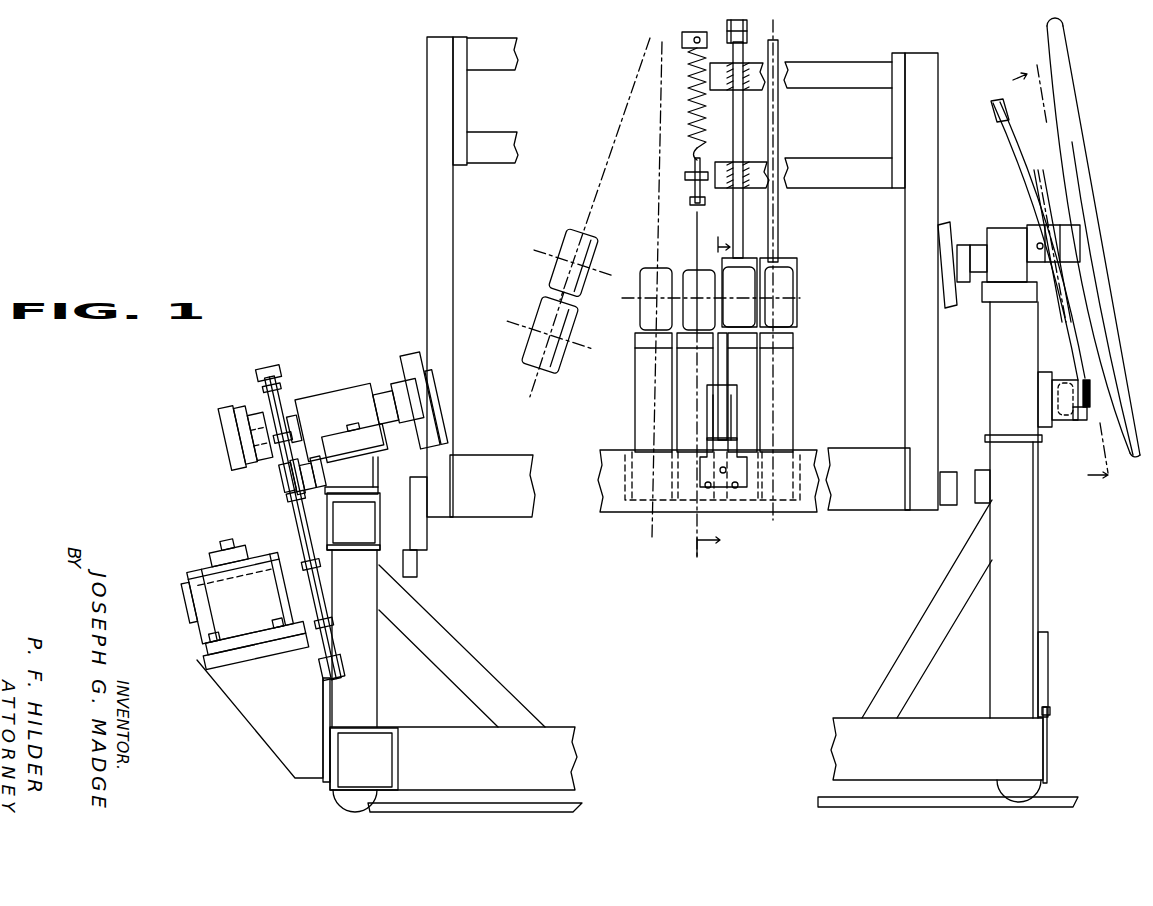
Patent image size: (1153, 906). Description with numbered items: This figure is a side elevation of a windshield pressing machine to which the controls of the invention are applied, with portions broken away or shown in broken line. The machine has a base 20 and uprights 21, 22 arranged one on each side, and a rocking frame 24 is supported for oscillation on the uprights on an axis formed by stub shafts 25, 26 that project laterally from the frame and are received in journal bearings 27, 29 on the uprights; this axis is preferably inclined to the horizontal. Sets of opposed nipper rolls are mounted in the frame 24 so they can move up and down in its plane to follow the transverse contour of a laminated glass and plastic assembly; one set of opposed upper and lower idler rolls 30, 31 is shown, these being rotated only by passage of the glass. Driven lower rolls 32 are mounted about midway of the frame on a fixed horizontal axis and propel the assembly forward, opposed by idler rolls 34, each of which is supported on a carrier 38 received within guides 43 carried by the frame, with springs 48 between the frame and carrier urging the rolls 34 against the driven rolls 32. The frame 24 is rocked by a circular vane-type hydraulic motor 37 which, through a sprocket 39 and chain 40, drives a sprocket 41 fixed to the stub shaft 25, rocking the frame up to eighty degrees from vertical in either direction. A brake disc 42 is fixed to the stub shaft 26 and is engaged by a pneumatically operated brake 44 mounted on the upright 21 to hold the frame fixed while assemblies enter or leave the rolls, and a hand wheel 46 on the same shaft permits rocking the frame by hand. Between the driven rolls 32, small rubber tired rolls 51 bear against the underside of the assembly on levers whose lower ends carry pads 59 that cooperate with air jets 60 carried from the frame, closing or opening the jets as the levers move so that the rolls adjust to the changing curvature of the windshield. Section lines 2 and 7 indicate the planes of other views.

The section line 2- 2 is at (713, 396).
The section line 7- 7 is at (1060, 276).
The base 20 is at (432, 737).
The upright 21 is at (1030, 578).
The upright 22 is at (370, 612).
The rocking frame 24 is at (447, 293).
The stub shaft 25 is at (283, 403).
The stub shaft 26 is at (963, 245).
The journal bearing 27 is at (340, 398).
The journal bearing 29 is at (1002, 228).
The upper idler roll 30 is at (583, 238).
The lower idler roll 31 is at (543, 377).
The driven lower rolls 32 is at (642, 343).
The idler rolls 34 is at (722, 272).
The circular vane-type hydraulic motor 37 is at (205, 577).
The carrier 38 is at (780, 220).
The sprocket 39 is at (308, 642).
The chain 40 is at (290, 505).
The sprocket 41 is at (272, 465).
The brake disc 42 is at (1073, 340).
The guides 43 is at (754, 160).
The pneumatically operated brake 44 is at (1073, 417).
The hand wheel 46 is at (1133, 462).
The springs 48 is at (688, 115).
The rubber tired rolls 51 is at (723, 360).
The pad 59 is at (707, 440).
The air jets 60 is at (727, 470).